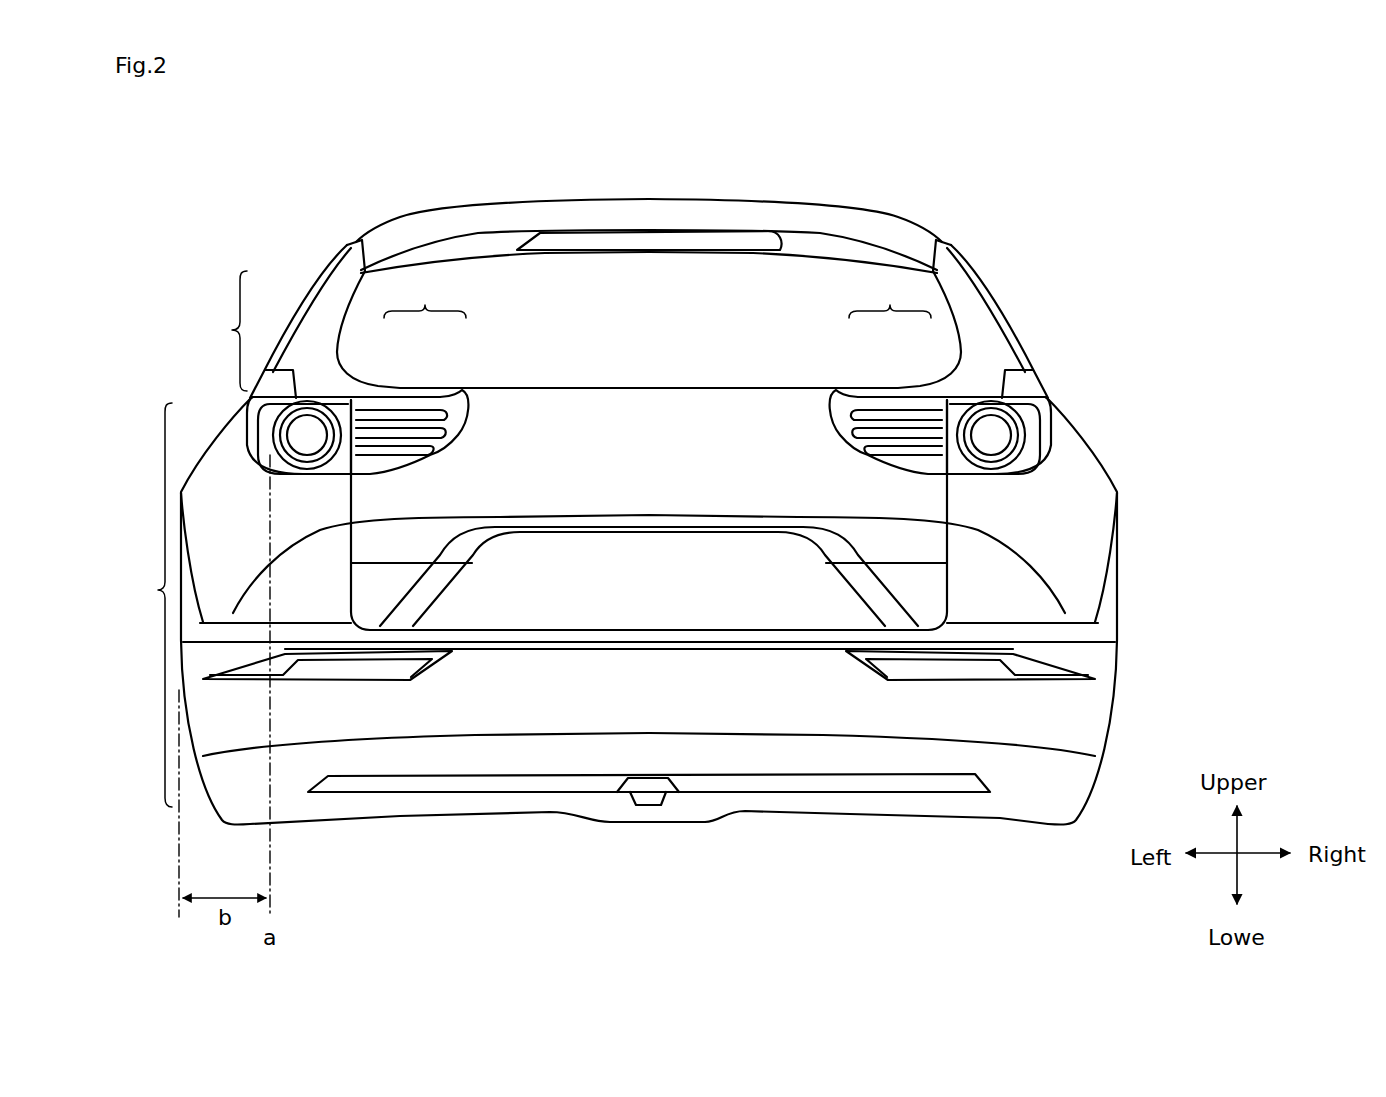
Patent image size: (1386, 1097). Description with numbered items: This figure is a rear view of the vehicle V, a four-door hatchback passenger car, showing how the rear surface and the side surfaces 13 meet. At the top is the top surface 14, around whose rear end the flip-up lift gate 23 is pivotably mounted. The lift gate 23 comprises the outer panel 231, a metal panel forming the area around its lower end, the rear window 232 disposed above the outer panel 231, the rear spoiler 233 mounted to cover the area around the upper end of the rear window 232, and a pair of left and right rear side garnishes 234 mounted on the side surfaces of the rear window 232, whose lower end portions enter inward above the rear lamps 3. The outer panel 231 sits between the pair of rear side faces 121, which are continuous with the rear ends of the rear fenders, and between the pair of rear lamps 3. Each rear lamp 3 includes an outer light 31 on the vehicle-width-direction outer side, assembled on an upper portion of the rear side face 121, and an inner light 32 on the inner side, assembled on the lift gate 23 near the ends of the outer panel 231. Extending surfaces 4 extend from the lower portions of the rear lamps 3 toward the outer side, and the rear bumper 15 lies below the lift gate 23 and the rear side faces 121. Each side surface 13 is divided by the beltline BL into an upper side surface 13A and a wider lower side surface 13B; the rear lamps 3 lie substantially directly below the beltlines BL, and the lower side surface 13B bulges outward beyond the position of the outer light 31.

The top surface 14 is at (658, 176).
The vehicle V is at (996, 179).
The side surface 13 is at (172, 311).
The upper side surface 13A is at (216, 331).
The lower side surface 13B is at (140, 605).
The beltline BL is at (244, 397).
The extending surface 4 is at (258, 451).
The rear lamp 3 is at (649, 341).
The outer light 31 is at (321, 401).
The inner light 32 is at (401, 408).
The lift gate 23 is at (1090, 531).
The outer panel 231 is at (752, 423).
The rear window 232 is at (588, 292).
The rear spoiler 233 is at (743, 217).
The rear side garnish 234 is at (320, 296).
The rear side face 121 is at (317, 513).
The rear bumper 15 is at (767, 723).